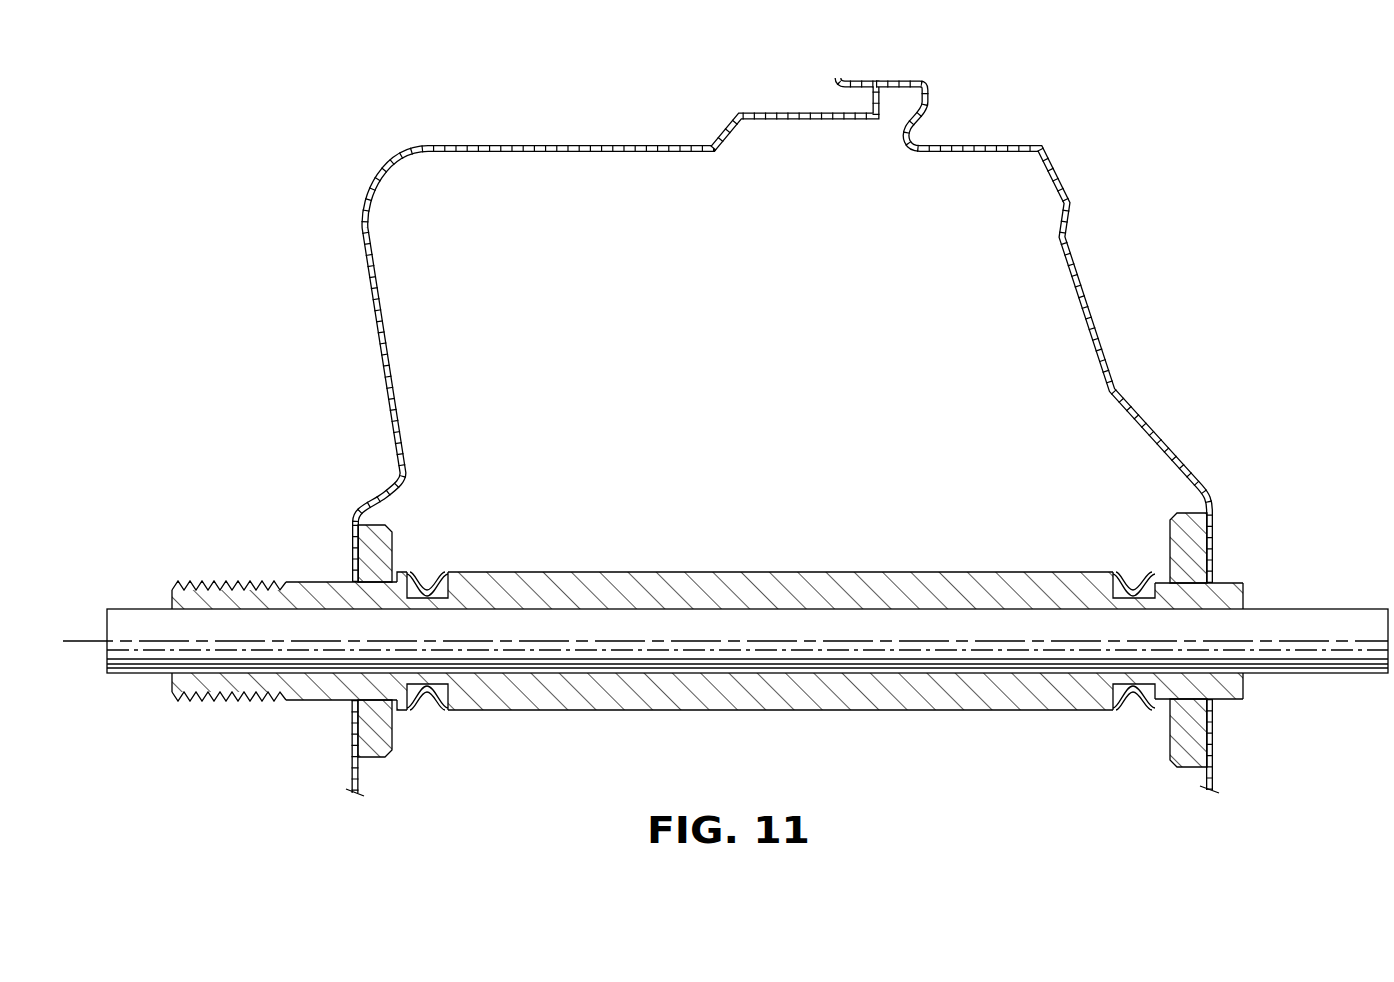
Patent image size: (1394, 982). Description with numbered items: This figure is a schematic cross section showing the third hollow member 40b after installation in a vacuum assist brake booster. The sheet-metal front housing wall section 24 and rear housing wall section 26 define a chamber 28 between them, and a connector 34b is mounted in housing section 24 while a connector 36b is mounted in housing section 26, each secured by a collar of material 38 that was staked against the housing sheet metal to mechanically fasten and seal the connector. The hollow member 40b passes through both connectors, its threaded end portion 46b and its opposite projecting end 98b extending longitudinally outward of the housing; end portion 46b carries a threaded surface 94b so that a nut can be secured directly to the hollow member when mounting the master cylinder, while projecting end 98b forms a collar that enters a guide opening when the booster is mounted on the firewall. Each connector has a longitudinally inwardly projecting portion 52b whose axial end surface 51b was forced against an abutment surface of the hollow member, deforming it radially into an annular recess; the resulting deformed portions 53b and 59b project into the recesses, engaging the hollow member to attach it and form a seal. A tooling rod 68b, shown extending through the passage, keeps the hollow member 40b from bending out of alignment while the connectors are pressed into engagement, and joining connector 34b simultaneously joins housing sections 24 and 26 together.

The front housing wall section 24 is at (378, 322).
The rear housing wall section 26 is at (1098, 335).
The chamber 28 is at (726, 288).
The connector 34b is at (384, 530).
The connector 36b is at (1180, 522).
The collar of material 38 is at (352, 582).
The hollow member 40b is at (736, 592).
The end portion 46b is at (298, 585).
The axial end surface 51b is at (455, 576).
The projecting portion 52b is at (396, 712).
The deformed portion 53b is at (430, 574).
The deformed portion 59b is at (1133, 590).
The tooling rod 68b is at (1352, 625).
The threaded surface 94b is at (200, 582).
The projecting end 98b is at (1243, 702).